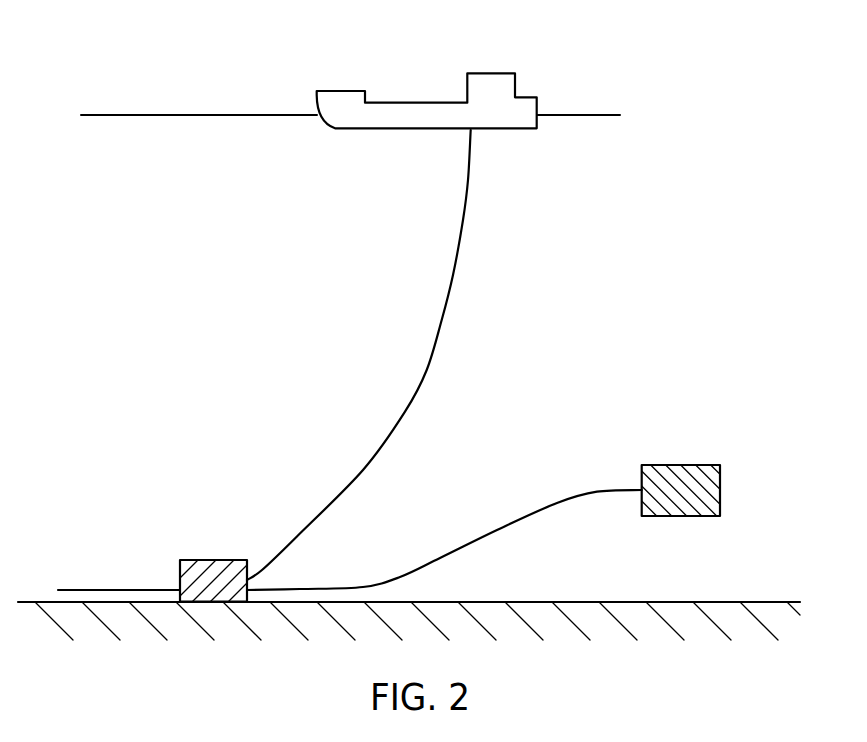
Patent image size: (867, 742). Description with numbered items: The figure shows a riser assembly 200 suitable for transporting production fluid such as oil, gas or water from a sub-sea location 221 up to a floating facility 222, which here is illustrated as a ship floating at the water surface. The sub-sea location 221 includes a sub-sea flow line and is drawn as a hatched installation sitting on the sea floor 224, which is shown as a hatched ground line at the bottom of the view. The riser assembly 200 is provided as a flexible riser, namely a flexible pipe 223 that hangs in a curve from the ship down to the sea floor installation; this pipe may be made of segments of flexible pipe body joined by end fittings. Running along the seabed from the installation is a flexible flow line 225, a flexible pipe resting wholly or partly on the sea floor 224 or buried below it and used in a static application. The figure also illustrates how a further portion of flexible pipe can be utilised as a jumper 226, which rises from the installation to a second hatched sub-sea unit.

The riser assembly 200 is at (260, 332).
The sub-sea location 221 is at (213, 560).
The floating facility 222 is at (342, 91).
The flexible pipe 223 is at (405, 412).
The sea floor 224 is at (737, 602).
The flexible flow line 225 is at (123, 590).
The jumper 226 is at (553, 503).